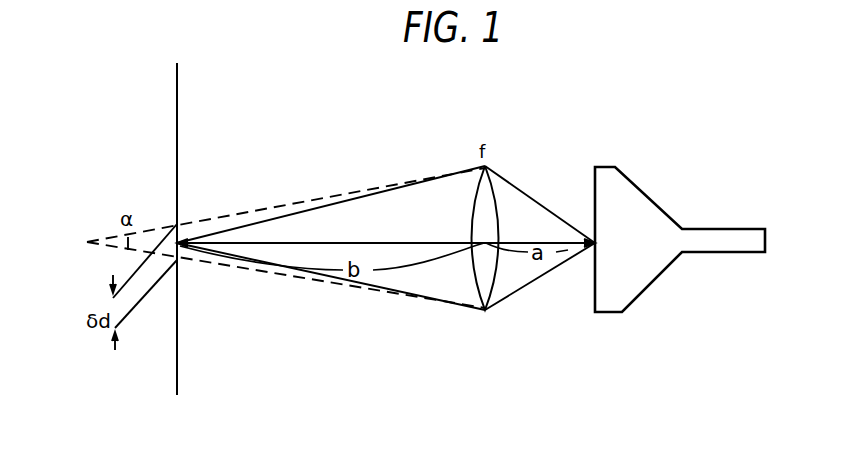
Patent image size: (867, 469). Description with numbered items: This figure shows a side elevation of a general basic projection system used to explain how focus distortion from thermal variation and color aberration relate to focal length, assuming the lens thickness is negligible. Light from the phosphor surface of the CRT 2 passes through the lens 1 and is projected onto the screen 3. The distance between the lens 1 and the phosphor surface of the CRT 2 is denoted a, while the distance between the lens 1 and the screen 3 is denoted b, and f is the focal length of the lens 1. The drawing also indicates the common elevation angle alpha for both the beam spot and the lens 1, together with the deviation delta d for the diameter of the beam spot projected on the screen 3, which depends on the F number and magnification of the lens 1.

The lens 1 is at (485, 285).
The CRT 2 is at (650, 285).
The screen 3 is at (177, 360).